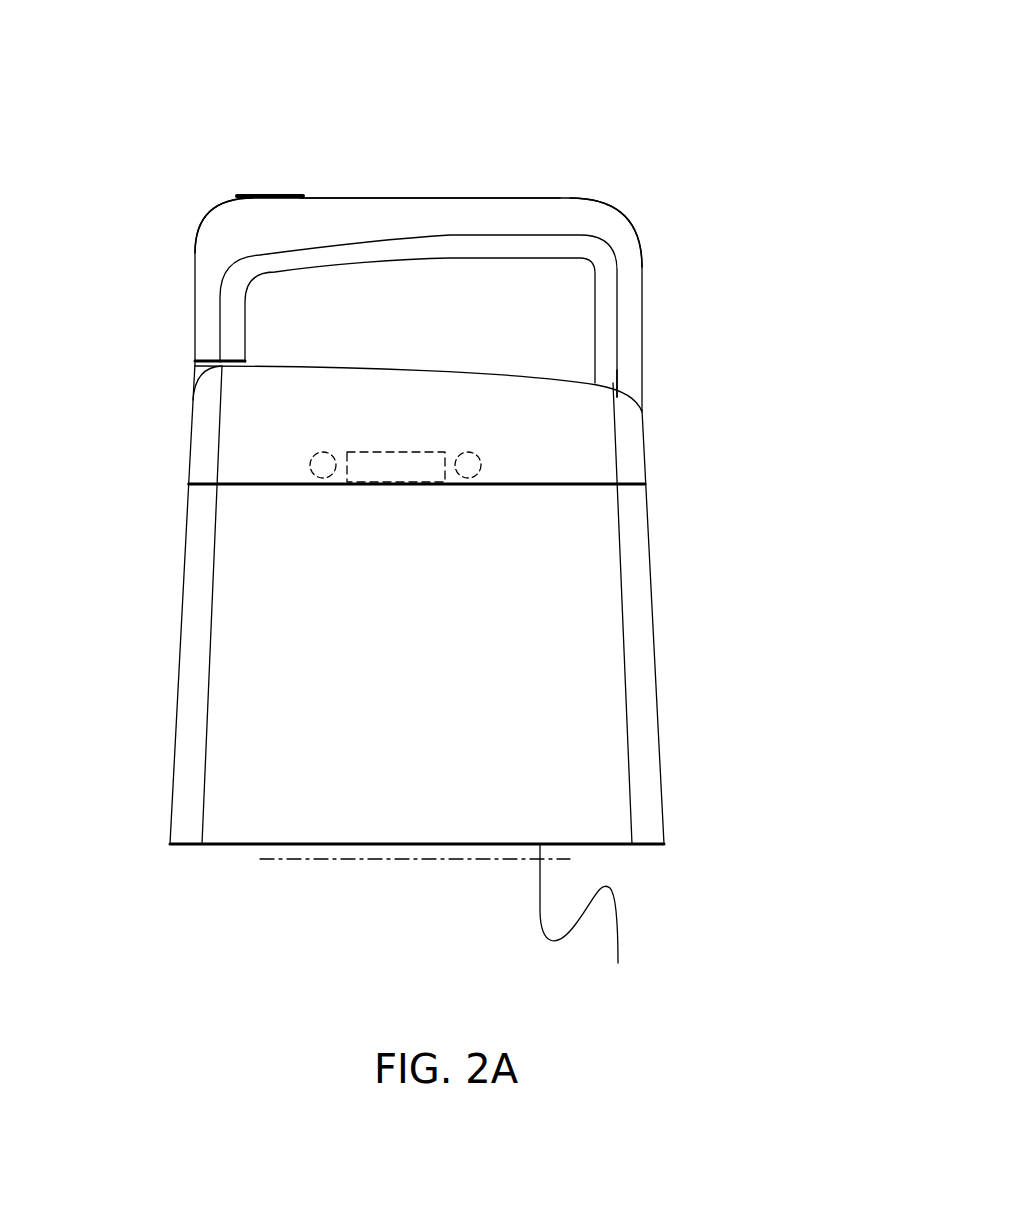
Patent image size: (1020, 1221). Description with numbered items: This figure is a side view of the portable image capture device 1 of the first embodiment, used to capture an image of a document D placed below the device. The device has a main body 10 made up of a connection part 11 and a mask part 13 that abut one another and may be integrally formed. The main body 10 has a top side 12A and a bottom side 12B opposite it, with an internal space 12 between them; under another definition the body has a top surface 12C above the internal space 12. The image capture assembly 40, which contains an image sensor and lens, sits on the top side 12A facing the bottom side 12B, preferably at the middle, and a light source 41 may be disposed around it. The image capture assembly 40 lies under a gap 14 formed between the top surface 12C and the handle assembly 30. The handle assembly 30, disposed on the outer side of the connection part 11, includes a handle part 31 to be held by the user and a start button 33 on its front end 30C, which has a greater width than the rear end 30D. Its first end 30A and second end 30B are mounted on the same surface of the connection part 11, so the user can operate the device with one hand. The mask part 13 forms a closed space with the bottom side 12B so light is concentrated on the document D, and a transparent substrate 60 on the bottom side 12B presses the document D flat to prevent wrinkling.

The portable image capture device 1 is at (752, 331).
The main body 10 is at (93, 435).
The connection part 11 is at (203, 432).
The internal space 12 is at (595, 448).
The top side 12A is at (492, 495).
The bottom side 12B is at (440, 832).
The top surface 12C is at (303, 365).
The mask part 13 is at (213, 595).
The gap 14 is at (547, 283).
The handle assembly 30 is at (502, 78).
The handle part 31 is at (488, 210).
The start button 33 is at (270, 193).
The first end 30A is at (205, 352).
The second end 30B is at (633, 387).
The front end 30C is at (231, 200).
The rear end 30D is at (575, 207).
The image capture assembly 40 is at (397, 452).
The light source 41 is at (315, 480).
The transparent substrate 60 is at (592, 930).
The document D is at (342, 862).